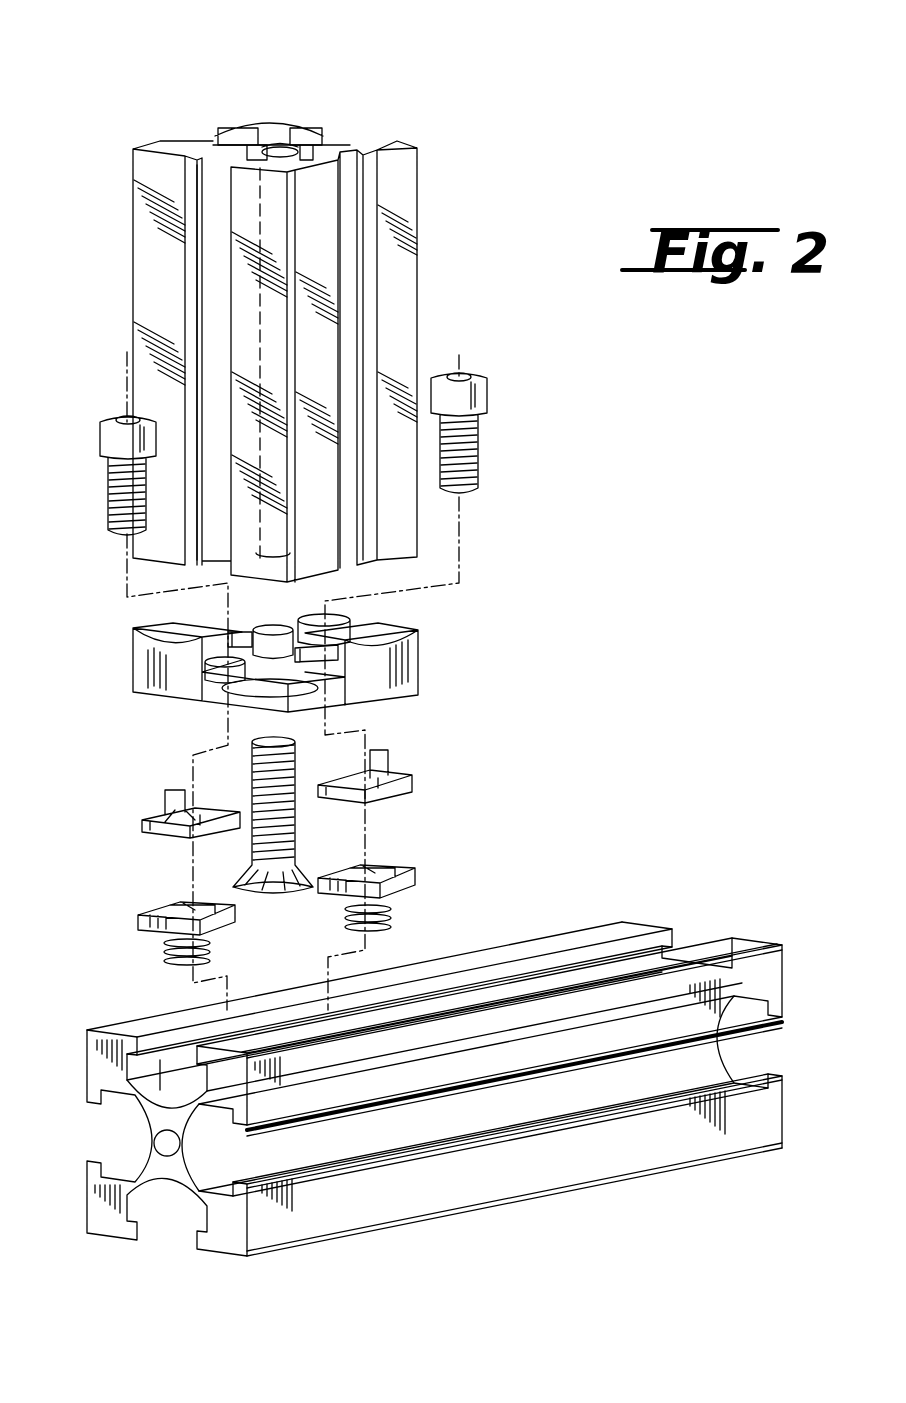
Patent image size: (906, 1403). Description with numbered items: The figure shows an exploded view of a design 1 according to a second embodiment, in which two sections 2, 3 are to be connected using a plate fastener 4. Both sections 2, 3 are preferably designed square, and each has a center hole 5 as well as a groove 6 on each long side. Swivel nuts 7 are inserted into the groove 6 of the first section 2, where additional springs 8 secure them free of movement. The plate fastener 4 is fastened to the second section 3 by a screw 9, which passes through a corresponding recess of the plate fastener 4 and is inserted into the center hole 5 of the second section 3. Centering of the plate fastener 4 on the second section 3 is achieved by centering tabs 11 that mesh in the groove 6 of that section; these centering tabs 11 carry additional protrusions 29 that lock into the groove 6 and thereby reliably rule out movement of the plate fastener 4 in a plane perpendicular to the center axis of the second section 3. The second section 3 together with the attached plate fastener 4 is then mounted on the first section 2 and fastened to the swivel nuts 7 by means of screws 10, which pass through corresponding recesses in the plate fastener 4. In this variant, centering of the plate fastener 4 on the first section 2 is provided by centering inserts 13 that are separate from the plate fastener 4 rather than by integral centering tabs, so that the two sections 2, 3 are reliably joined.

The design 1 is at (603, 115).
The first section 2 is at (462, 1183).
The second section 3 is at (422, 228).
The plate fastener 4 is at (420, 680).
The center hole 5 is at (283, 137).
The groove 6 is at (203, 138).
The swivel nut 7 is at (415, 868).
The spring 8 is at (393, 920).
The screw 9 is at (272, 888).
The screw 10 is at (100, 437).
The centering tab 11 is at (350, 617).
The centering insert 13 is at (412, 779).
The protrusion 29 is at (300, 612).